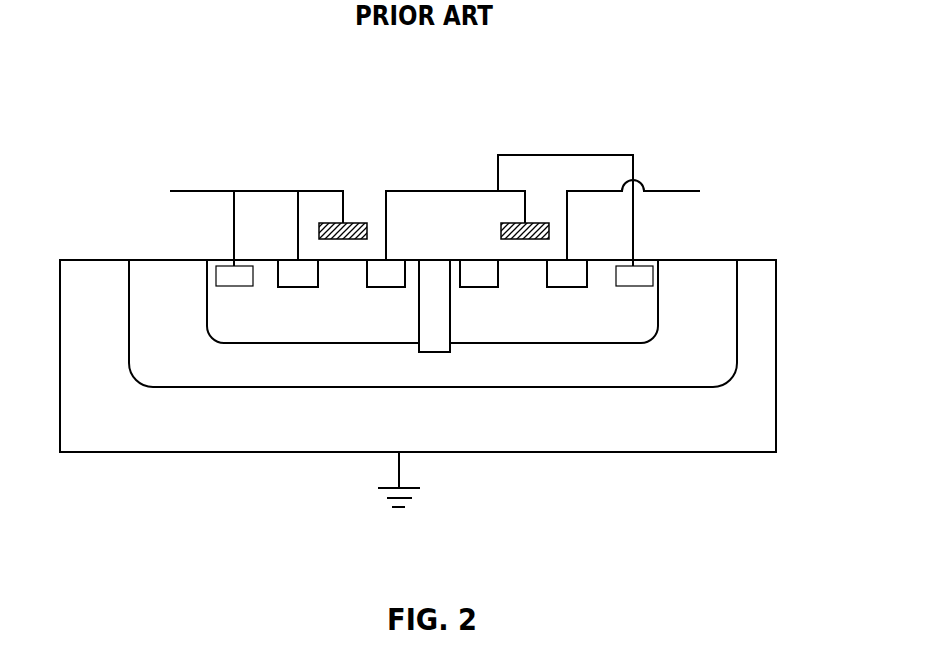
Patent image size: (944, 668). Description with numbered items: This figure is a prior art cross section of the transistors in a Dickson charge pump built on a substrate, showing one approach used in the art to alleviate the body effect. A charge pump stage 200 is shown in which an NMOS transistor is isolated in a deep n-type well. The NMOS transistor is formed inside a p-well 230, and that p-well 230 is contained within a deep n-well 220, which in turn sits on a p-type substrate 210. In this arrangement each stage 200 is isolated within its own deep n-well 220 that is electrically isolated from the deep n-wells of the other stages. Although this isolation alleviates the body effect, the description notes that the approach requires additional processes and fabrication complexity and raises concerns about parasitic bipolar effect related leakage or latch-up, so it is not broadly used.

The stage 200 is at (391, 108).
The p-type substrate 210 is at (250, 440).
The deep n-well 220 is at (488, 376).
The p-well 230 is at (558, 330).